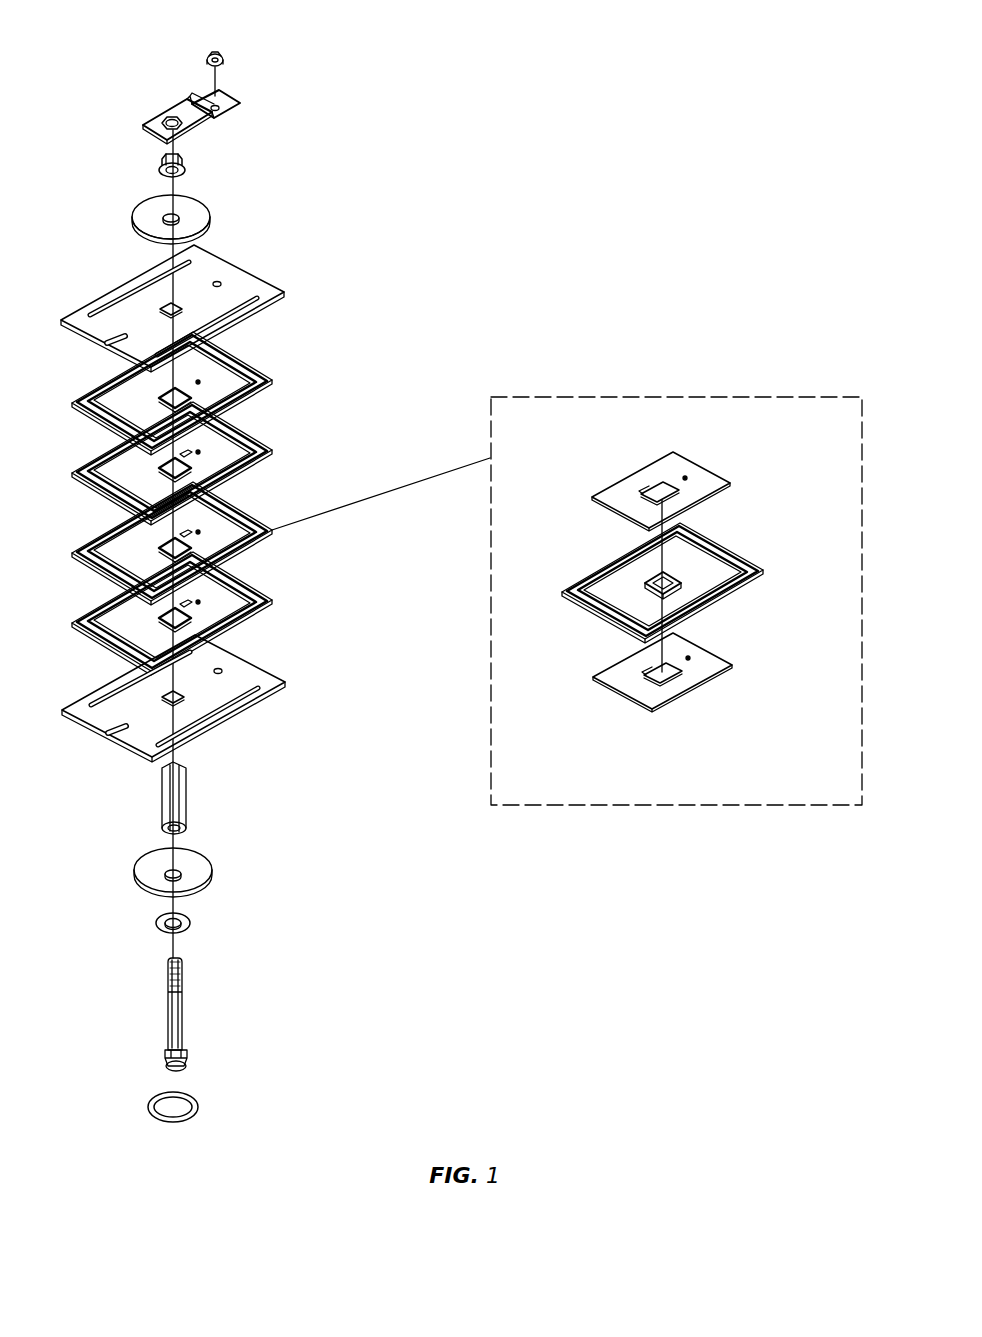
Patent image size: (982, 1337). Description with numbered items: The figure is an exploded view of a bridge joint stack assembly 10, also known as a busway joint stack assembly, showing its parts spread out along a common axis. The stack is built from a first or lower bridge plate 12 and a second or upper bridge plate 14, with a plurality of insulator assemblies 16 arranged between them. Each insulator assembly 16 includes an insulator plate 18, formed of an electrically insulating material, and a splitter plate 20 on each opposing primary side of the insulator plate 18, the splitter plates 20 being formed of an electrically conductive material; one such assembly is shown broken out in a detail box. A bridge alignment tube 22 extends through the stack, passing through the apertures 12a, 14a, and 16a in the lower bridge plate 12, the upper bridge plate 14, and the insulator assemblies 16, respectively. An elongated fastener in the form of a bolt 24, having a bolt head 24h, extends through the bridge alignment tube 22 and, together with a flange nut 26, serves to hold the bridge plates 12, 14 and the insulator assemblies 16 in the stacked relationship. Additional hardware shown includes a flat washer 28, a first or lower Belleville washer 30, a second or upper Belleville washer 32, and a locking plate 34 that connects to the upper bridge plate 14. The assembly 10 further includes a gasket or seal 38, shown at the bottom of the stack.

The bridge joint stack assembly 10 is at (392, 270).
The lower bridge plate 12 is at (276, 653).
The aperture 12a is at (186, 694).
The upper bridge plate 14 is at (276, 269).
The aperture 14a is at (184, 307).
The insulator assembly 16 is at (261, 562).
The aperture 16a is at (248, 633).
The insulator plate 18 is at (745, 610).
The splitter plate 20 is at (701, 440).
The bridge alignment tube 22 is at (207, 790).
The bolt 24 is at (202, 1018).
The bolt head 24h is at (207, 1064).
The flange nut 26 is at (206, 172).
The flat washer 28 is at (210, 923).
The lower Belleville washer 30 is at (232, 862).
The upper Belleville washer 32 is at (225, 211).
The locking plate 34 is at (250, 121).
The gasket or seal 38 is at (214, 1104).